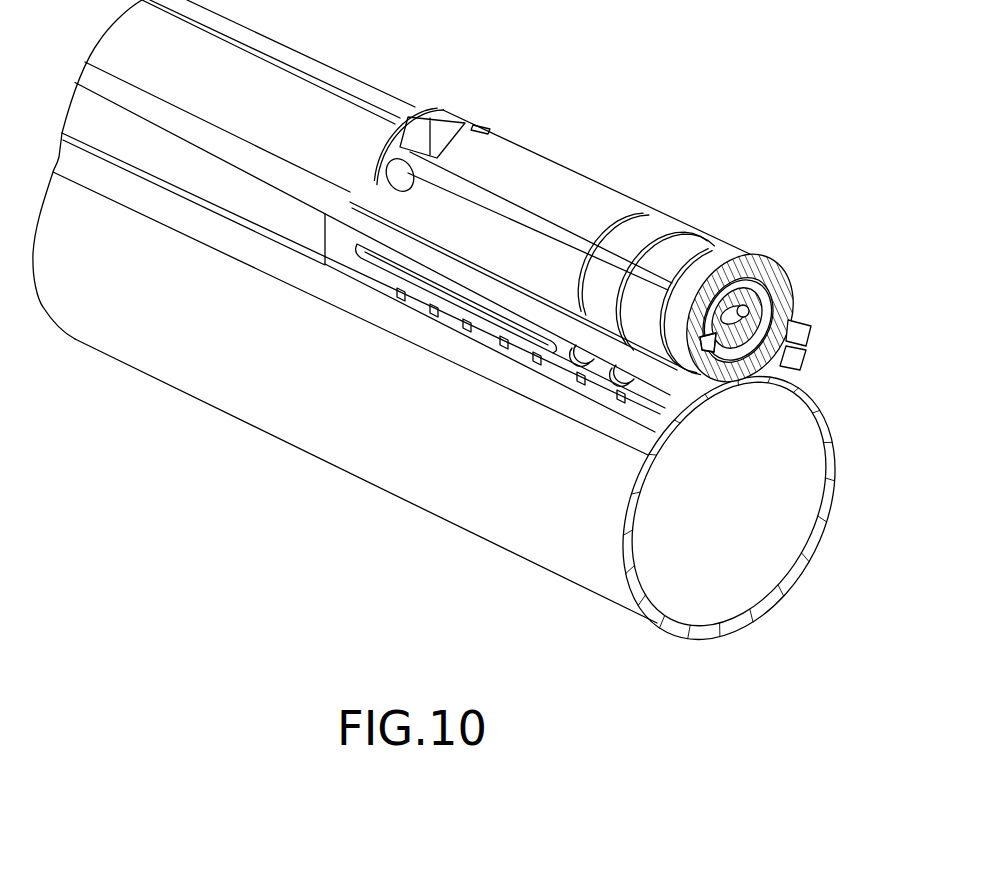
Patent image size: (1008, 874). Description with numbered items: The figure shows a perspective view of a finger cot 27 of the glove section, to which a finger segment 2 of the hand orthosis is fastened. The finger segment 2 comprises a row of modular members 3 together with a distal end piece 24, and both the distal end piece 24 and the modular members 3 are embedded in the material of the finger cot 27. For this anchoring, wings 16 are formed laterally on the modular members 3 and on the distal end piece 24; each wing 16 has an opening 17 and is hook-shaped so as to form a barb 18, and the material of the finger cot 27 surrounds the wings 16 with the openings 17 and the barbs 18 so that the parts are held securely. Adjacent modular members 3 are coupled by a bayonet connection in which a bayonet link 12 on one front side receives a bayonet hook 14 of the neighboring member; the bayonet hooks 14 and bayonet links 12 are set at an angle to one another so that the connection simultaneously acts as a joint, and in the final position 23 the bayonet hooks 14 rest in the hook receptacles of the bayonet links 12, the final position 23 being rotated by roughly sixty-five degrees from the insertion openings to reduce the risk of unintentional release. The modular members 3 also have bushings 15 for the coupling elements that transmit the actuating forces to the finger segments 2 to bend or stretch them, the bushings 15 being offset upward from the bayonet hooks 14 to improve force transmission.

The finger segment 2 is at (726, 220).
The modular member 3 is at (657, 236).
The bayonet link 12 is at (753, 349).
The final position 23 is at (716, 354).
The bayonet hook 14 is at (760, 337).
The bushing 15 is at (743, 310).
The wing 16 is at (777, 357).
The opening 17 is at (387, 259).
The barb 18 is at (617, 390).
The distal end piece 24 is at (491, 162).
The finger cot 27 is at (162, 348).